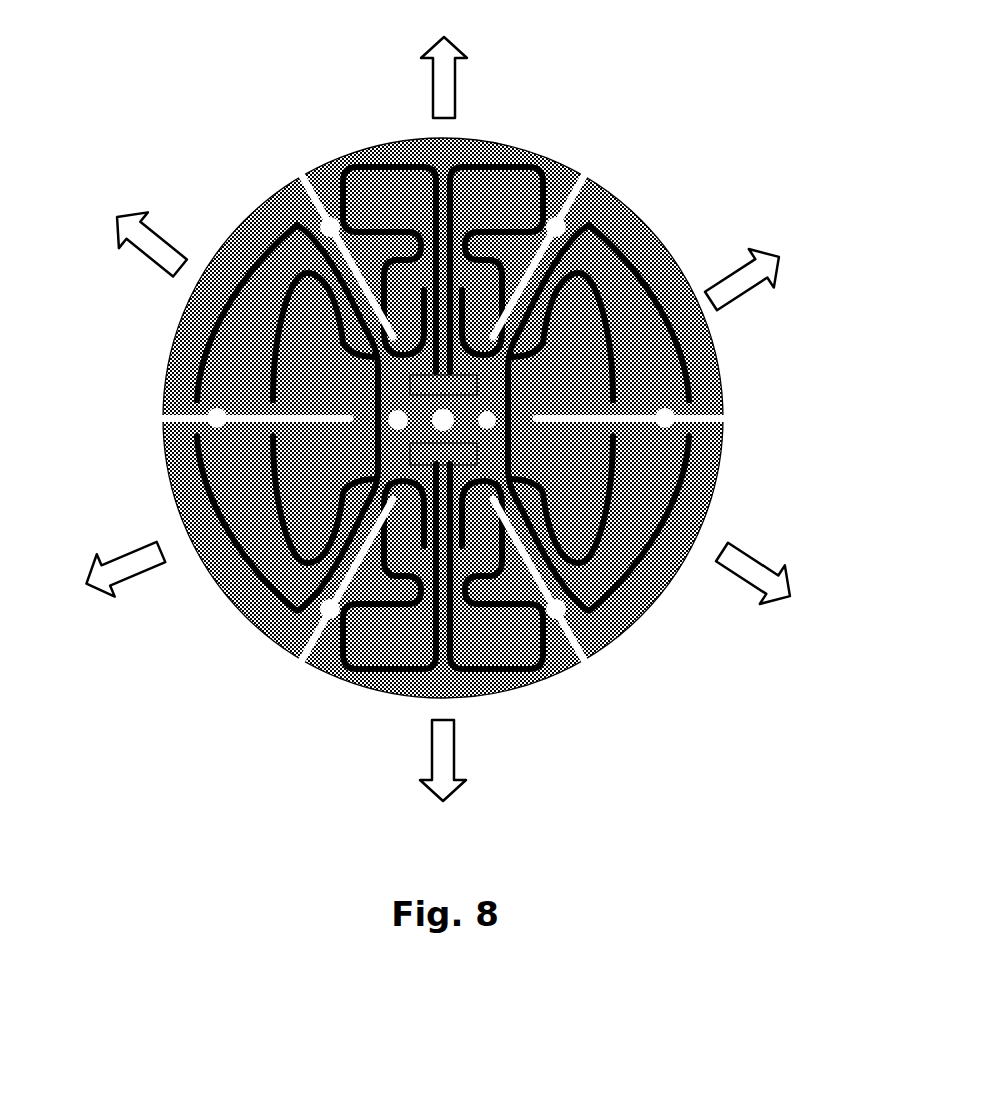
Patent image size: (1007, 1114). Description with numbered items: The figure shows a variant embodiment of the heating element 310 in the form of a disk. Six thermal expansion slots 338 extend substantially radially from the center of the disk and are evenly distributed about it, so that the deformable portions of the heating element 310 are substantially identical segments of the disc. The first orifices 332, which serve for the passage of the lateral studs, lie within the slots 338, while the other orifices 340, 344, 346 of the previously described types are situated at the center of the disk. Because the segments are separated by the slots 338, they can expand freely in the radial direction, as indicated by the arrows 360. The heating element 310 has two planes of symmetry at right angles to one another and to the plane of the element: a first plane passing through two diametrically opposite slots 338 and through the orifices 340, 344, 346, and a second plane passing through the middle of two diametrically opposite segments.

The heating element 310 is at (675, 168).
The first orifices 332 is at (336, 217).
The thermal expansion slots 338 is at (560, 216).
The orifice 340 is at (442, 432).
The orifice 344 is at (397, 431).
The orifice 346 is at (485, 430).
The arrows 360 is at (180, 252).